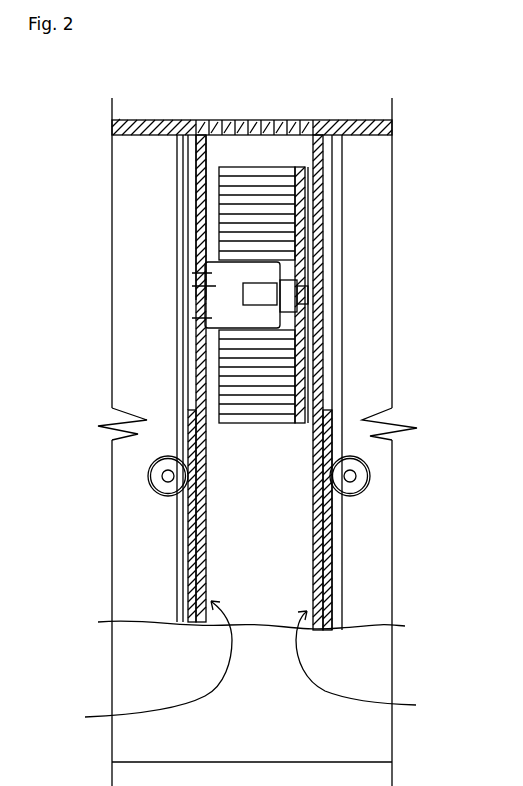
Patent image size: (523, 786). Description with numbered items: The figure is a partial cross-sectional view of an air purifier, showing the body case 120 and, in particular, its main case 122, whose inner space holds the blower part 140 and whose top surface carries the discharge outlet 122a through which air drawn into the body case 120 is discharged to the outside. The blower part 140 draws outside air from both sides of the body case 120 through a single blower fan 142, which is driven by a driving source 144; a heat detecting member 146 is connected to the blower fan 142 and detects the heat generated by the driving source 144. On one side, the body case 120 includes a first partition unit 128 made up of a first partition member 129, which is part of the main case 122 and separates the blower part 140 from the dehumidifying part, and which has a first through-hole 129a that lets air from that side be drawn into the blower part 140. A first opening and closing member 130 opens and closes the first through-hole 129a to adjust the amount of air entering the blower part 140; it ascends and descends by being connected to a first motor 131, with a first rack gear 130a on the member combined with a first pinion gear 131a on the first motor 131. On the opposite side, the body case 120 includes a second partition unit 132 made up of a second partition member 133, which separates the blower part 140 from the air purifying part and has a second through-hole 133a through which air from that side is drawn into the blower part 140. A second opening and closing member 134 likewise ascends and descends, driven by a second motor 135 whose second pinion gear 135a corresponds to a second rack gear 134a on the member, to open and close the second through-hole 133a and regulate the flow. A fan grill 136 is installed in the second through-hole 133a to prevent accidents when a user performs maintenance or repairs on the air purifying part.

The body case 120 is at (257, 425).
The main case 122 is at (345, 120).
The discharge outlet 122a is at (265, 120).
The first partition unit 128 is at (272, 662).
The first partition member 129 is at (323, 192).
The first through-hole 129a is at (323, 258).
The first opening and closing member 130 is at (343, 523).
The first rack gear 130a is at (340, 563).
The first motor 131 is at (371, 470).
The first pinion gear 131a is at (357, 494).
The second partition unit 132 is at (141, 663).
The second partition member 133 is at (204, 618).
The second through-hole 133a is at (196, 172).
The second opening and closing member 134 is at (188, 604).
The second rack gear 134a is at (181, 548).
The second motor 135 is at (172, 497).
The second pinion gear 135a is at (148, 478).
The fan grill 136 is at (197, 368).
The blower part 140 is at (237, 165).
The blower fan 142 is at (300, 392).
The driving source 144 is at (200, 273).
The heat detecting member 146 is at (248, 296).